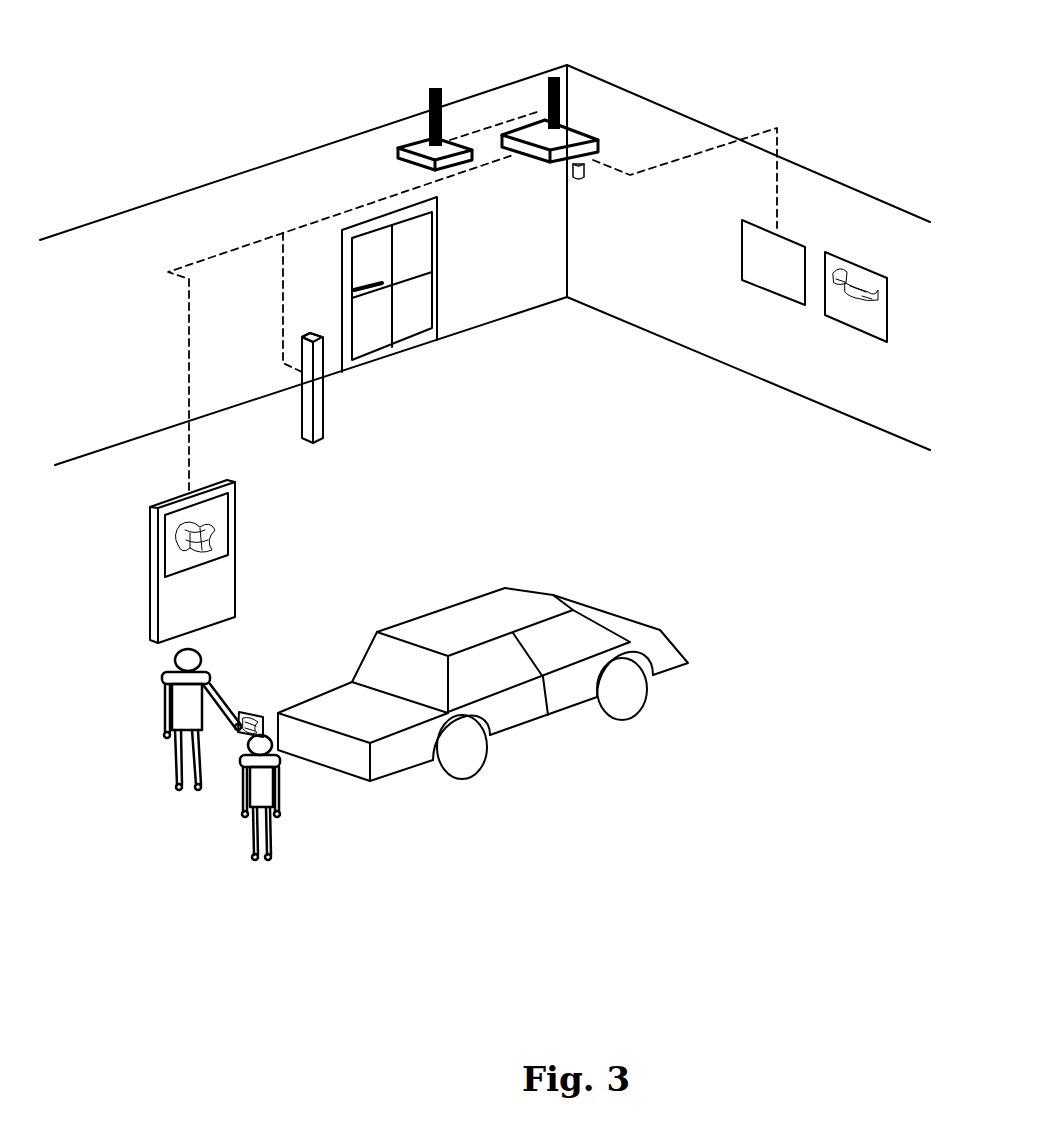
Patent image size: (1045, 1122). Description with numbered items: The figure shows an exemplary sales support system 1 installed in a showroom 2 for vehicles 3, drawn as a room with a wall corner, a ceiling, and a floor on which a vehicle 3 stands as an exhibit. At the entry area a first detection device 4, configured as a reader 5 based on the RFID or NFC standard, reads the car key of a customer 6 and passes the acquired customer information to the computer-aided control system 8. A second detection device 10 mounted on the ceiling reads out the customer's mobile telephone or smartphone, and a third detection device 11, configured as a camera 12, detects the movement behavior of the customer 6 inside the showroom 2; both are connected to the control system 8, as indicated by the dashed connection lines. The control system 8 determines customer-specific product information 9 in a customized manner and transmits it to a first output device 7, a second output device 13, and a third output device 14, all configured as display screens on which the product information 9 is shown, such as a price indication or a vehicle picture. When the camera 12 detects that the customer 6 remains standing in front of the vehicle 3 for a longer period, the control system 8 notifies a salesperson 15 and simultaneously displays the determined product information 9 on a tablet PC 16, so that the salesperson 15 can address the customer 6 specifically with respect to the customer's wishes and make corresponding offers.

The sales support system 1 is at (677, 76).
The showroom 2 is at (248, 116).
The vehicle 3 is at (416, 600).
The first detection device 4 is at (332, 396).
The reader 5 is at (311, 334).
The customer 6 is at (263, 783).
The first output device 7 is at (140, 525).
The control system 8 is at (570, 133).
The customer-specific product information 9 is at (212, 527).
The second detection device 10 is at (391, 169).
The third detection device 11 is at (581, 200).
The camera 12 is at (584, 167).
The second output device 13 is at (746, 207).
The third output device 14 is at (855, 255).
The salesperson 15 is at (185, 700).
The tablet PC 16 is at (242, 694).